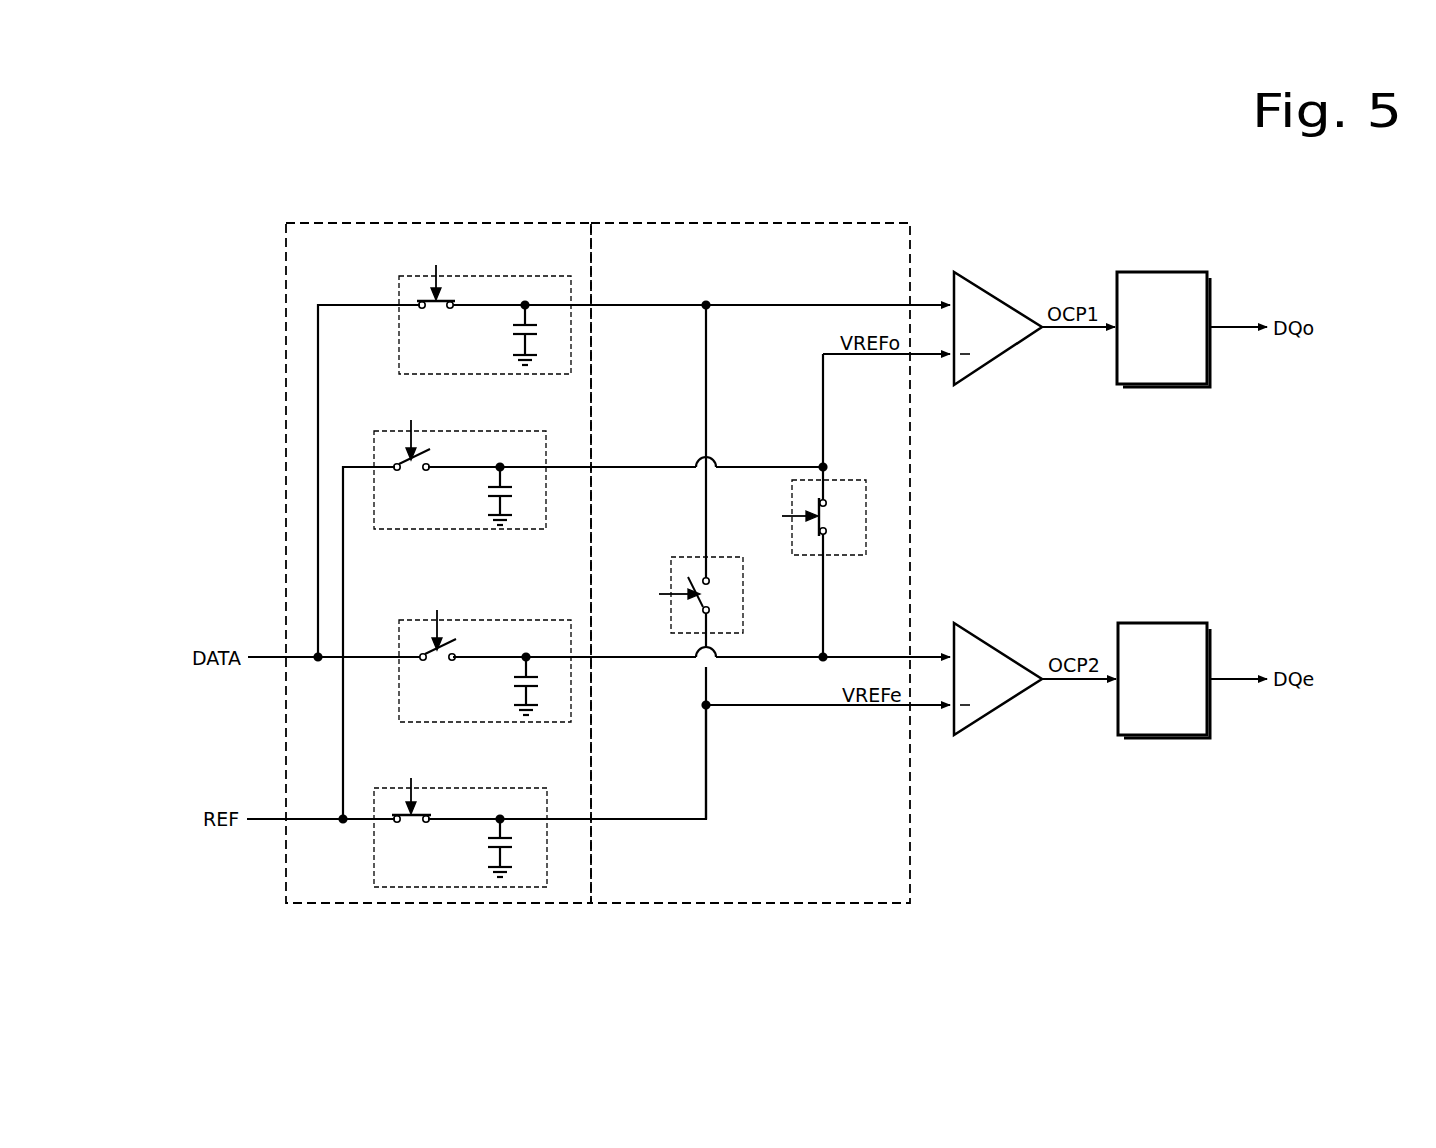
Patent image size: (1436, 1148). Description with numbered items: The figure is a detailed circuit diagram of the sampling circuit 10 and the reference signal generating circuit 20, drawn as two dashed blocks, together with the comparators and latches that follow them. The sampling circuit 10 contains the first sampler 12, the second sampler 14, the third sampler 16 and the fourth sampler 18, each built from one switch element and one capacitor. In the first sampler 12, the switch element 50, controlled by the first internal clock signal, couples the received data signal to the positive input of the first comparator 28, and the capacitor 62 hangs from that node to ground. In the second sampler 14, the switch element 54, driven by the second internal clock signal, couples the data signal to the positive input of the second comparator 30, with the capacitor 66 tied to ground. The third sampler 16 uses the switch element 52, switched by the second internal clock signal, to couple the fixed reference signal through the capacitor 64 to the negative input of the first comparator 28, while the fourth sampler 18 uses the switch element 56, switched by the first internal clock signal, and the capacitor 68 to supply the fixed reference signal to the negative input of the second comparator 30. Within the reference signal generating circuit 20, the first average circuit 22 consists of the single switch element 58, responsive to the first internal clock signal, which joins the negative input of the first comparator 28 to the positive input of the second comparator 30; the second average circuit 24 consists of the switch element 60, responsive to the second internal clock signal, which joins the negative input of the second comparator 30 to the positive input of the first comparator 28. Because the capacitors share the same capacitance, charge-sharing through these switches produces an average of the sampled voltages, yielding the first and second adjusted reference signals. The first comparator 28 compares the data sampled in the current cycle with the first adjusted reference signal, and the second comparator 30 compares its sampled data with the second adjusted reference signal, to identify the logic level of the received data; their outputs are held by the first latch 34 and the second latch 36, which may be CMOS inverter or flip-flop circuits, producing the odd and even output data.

The sampling circuit 10 is at (504, 222).
The first sampler 12 is at (525, 276).
The second sampler 14 is at (528, 620).
The third sampler 16 is at (504, 431).
The fourth sampler 18 is at (503, 788).
The reference signal generating circuit 20 is at (833, 222).
The first average circuit 22 is at (845, 480).
The second average circuit 24 is at (743, 617).
The first comparator 28 is at (1000, 298).
The second comparator 30 is at (1000, 648).
The first latch 34 is at (1170, 272).
The second latch 36 is at (1171, 623).
The switch element 50 is at (436, 316).
The switch element 52 is at (412, 472).
The switch element 54 is at (438, 662).
The switch element 56 is at (411, 830).
The switch element 58 is at (837, 517).
The switch element 60 is at (712, 595).
The capacitor 62 is at (538, 335).
The capacitor 64 is at (513, 496).
The capacitor 66 is at (539, 686).
The capacitor 68 is at (513, 848).